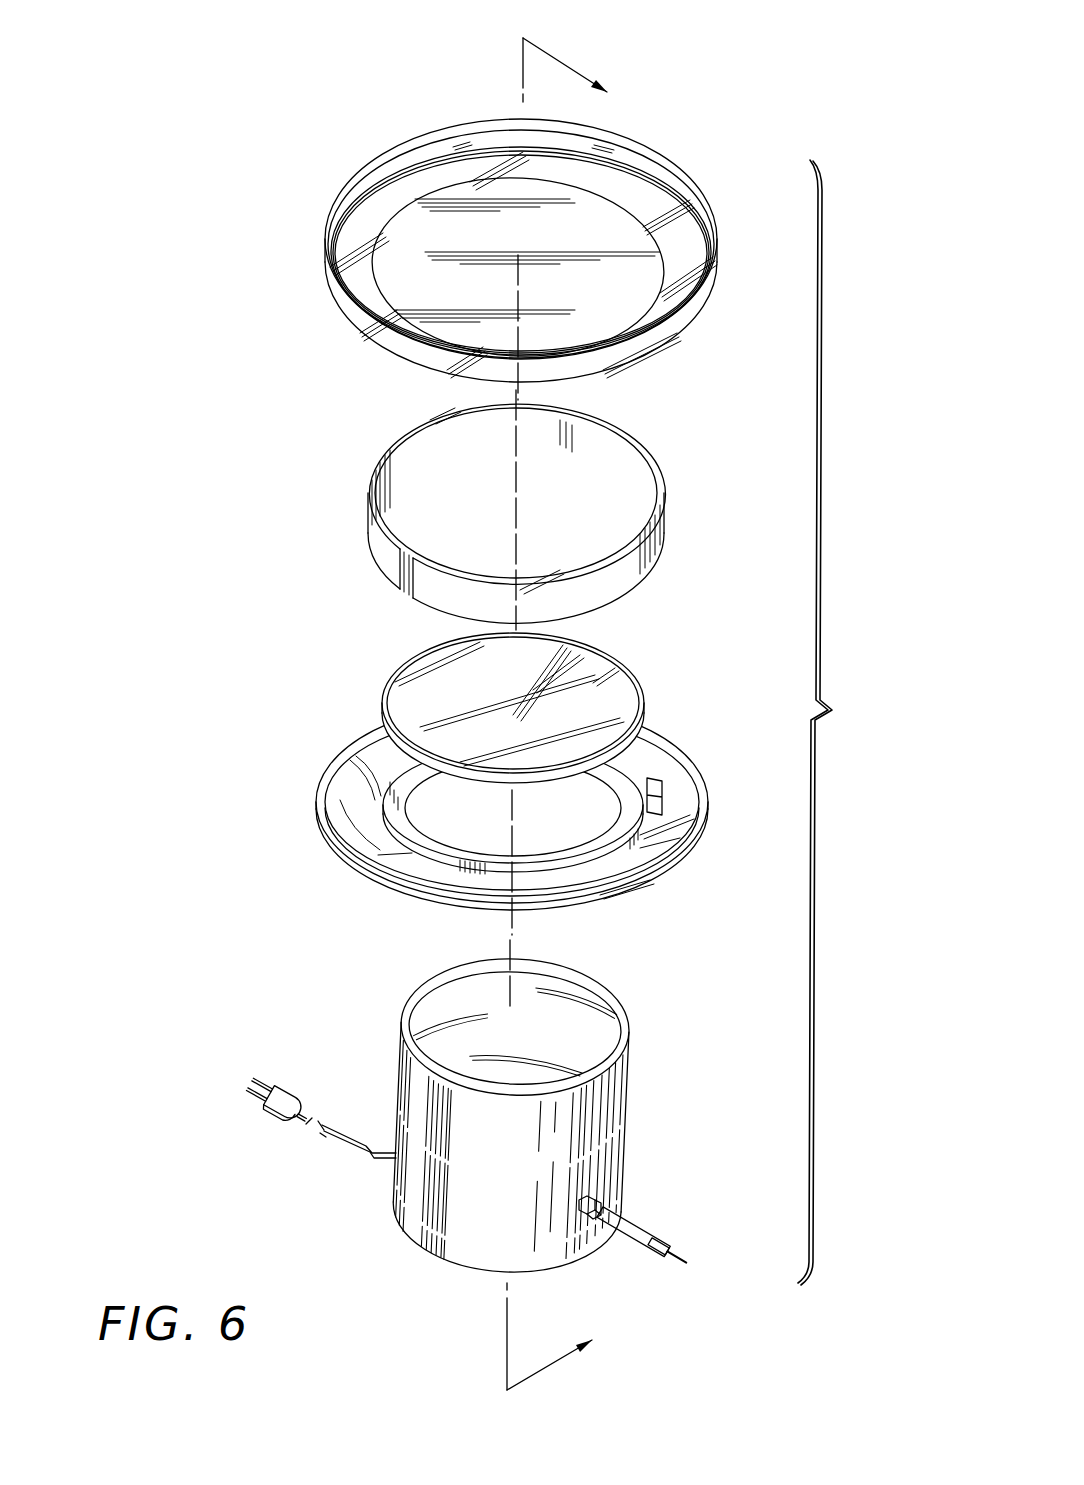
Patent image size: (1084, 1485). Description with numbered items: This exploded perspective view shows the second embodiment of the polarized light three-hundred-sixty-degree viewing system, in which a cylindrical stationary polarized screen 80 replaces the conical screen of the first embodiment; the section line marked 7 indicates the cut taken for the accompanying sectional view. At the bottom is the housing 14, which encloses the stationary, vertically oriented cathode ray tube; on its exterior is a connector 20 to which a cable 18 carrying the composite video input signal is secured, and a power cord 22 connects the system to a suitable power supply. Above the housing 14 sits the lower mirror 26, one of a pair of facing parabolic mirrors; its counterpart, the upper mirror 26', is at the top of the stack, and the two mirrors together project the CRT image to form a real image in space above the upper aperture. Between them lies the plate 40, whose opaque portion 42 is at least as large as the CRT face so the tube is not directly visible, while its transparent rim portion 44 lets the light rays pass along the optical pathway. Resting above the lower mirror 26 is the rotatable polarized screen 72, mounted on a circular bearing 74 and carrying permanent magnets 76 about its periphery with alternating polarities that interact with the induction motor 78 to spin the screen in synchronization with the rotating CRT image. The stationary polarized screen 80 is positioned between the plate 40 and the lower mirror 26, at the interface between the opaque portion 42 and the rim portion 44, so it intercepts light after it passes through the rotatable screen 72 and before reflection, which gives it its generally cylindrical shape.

The section line for FIG. 7 is at (557, 707).
The housing 14 is at (554, 1115).
The cable 18 is at (650, 1238).
The connector 20 is at (598, 1205).
The power cord 22 is at (343, 1152).
The lower mirror 26 is at (540, 811).
The upper mirror 26' is at (453, 232).
The plate 40 is at (325, 290).
The opaque portion 42 is at (605, 318).
The transparent rim portion 44 is at (345, 311).
The rotatable polarized screen 72 is at (494, 701).
The circular bearing 74 is at (405, 797).
The permanent magnets 76 is at (405, 663).
The induction motor 78 is at (660, 783).
The stationary polarized screen 80 is at (662, 548).